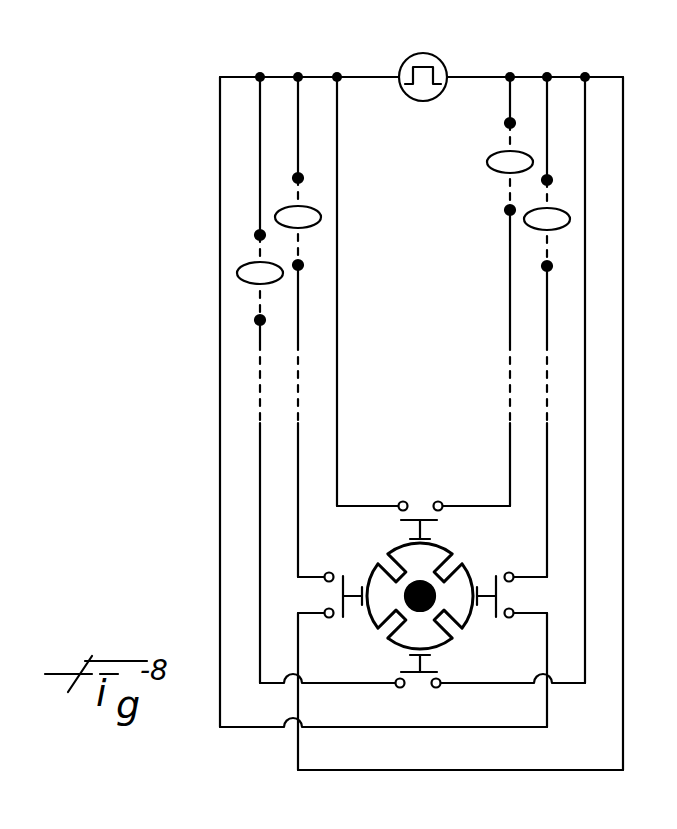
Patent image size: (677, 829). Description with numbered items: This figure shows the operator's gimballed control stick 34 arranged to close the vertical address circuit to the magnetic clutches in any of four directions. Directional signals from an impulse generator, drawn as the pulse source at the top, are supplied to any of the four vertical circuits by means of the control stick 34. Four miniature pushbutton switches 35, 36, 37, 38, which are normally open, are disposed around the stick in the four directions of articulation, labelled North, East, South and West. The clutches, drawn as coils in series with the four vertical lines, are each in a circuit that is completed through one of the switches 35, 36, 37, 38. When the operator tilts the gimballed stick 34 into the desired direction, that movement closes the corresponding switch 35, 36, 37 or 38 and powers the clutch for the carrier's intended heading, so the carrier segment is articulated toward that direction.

The control stick 34 is at (467, 570).
The pushbutton switch 35 is at (347, 614).
The pushbutton switch 36 is at (438, 521).
The pushbutton switch 37 is at (492, 613).
The pushbutton switch 38 is at (438, 672).